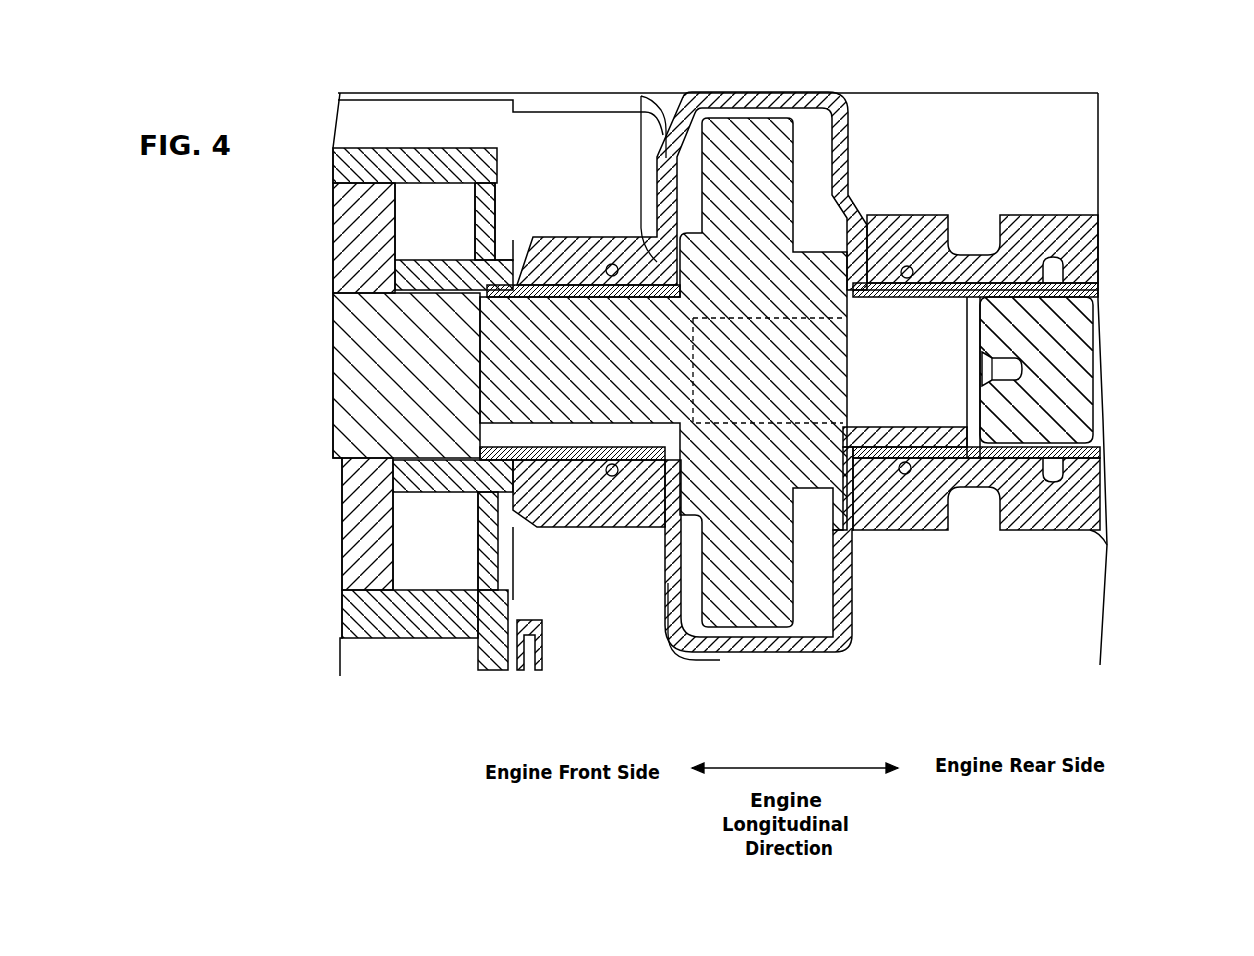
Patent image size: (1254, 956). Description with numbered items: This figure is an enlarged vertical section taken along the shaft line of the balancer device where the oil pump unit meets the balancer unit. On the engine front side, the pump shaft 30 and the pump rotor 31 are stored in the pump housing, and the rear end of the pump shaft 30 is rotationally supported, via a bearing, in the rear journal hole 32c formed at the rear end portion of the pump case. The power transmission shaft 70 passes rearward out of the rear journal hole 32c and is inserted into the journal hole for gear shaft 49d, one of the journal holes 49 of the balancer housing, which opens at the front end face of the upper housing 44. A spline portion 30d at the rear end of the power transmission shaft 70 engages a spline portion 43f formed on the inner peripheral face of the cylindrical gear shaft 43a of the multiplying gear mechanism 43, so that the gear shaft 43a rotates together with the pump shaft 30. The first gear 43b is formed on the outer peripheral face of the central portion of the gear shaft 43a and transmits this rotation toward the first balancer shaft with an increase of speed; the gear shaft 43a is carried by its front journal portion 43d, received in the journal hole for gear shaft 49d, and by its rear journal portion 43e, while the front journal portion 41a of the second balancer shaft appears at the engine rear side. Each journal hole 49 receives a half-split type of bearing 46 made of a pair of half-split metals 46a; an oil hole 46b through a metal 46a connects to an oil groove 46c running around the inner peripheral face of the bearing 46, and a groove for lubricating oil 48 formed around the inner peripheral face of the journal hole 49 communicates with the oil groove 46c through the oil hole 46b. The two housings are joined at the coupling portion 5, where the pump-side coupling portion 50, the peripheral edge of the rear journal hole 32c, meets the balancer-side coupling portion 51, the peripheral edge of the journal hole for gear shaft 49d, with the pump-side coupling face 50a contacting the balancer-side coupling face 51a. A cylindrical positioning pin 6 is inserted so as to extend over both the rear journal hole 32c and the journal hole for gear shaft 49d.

The coupling portion 5 is at (427, 598).
The positioning pin 6 is at (562, 341).
The pump shaft 30 is at (418, 283).
The spline portion 30d is at (752, 240).
The pump rotor 31 is at (383, 183).
The rear journal hole 32c is at (475, 290).
The front journal portion 41a is at (1085, 313).
The multiplying gear mechanism 43 is at (740, 355).
The gear shaft 43a is at (548, 255).
The first gear 43b is at (755, 630).
The front journal portion 43d is at (513, 590).
The rear journal portion 43e is at (922, 427).
The spline portion 43f is at (700, 320).
The upper-half split housing 44 is at (970, 290).
The half-split type of bearing 46 is at (859, 345).
The half-split member 46a is at (553, 285).
The oil hole 46b is at (859, 345).
The oil groove 46c is at (645, 285).
The groove for lubricating oil 48 is at (612, 264).
The journal hole 49 is at (676, 625).
The journal hole for gear shaft 49d is at (806, 603).
The pump-side coupling portion 50 is at (445, 500).
The pump-side coupling face 50a is at (393, 375).
The balancer-side coupling portion 51 is at (513, 600).
The balancer-side coupling face 51a is at (555, 298).
The power transmission shaft 70 is at (690, 92).